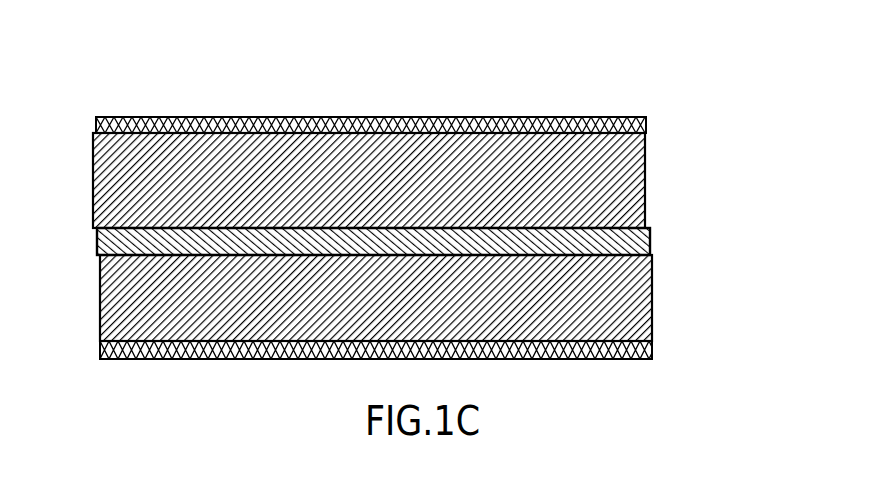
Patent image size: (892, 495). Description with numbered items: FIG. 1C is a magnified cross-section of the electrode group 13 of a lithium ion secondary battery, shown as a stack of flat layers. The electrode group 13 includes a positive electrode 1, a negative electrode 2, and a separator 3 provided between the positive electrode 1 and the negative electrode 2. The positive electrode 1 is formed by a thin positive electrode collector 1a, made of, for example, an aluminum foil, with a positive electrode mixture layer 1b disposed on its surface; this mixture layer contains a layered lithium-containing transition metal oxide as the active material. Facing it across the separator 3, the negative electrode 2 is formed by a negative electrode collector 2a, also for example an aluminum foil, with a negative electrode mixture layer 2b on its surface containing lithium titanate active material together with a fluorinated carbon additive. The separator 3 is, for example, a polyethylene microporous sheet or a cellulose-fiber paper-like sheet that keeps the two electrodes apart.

The positive electrode 1 is at (393, 169).
The positive electrode collector 1a is at (646, 126).
The positive electrode mixture layer 1b is at (640, 181).
The negative electrode 2 is at (393, 309).
The negative electrode collector 2a is at (424, 350).
The negative electrode mixture layer 2b is at (645, 301).
The separator 3 is at (648, 243).
The electrode group 13 is at (441, 247).